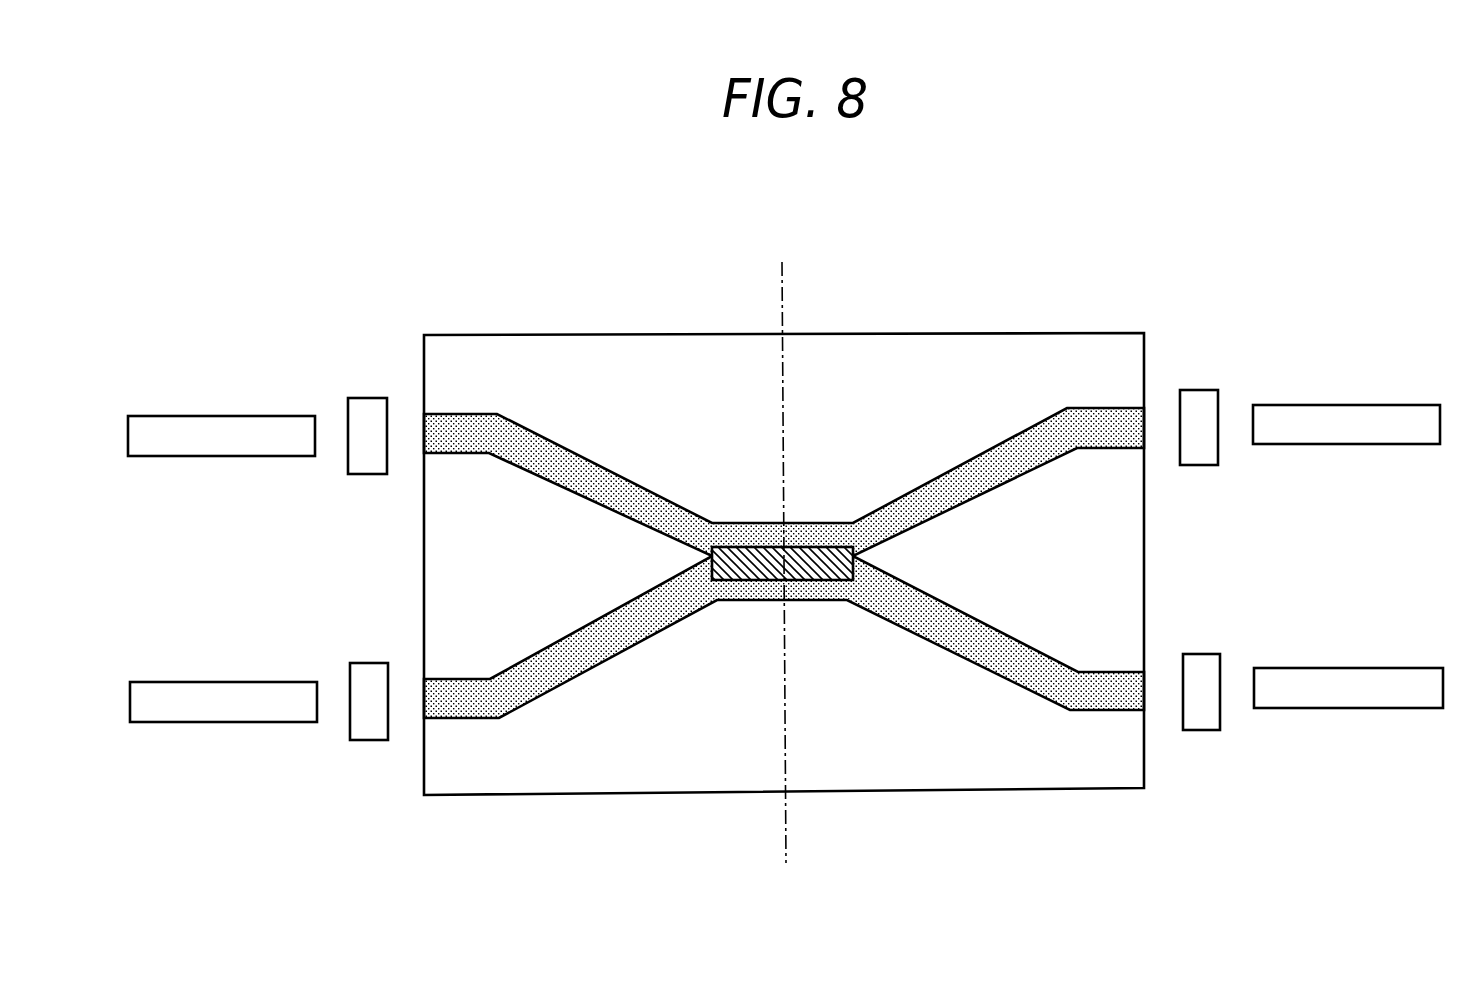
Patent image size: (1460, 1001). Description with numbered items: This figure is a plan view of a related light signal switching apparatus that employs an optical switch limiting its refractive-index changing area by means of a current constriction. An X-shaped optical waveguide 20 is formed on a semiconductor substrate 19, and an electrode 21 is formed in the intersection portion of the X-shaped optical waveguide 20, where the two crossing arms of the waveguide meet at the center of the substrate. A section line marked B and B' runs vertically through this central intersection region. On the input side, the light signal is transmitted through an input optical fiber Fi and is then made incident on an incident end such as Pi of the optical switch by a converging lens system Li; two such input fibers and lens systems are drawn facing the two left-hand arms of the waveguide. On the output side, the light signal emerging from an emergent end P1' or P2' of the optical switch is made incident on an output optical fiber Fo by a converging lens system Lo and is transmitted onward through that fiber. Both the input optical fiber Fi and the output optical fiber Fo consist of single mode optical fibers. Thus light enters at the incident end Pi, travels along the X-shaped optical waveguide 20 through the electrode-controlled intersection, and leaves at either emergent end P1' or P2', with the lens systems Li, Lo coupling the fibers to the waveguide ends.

The semiconductor substrate 19 is at (553, 335).
The X-shaped optical waveguide 20 is at (1027, 430).
The electrode 21 is at (733, 555).
The section line B is at (784, 389).
The section line B' is at (792, 732).
The input optical fiber Fi is at (227, 457).
The converging lens system Li is at (367, 475).
The converging lens system Lo is at (1200, 466).
The output optical fiber Fo is at (1340, 445).
The incident end Pi is at (448, 716).
The emergent end P1' is at (1148, 350).
The emergent end P2' is at (1107, 775).